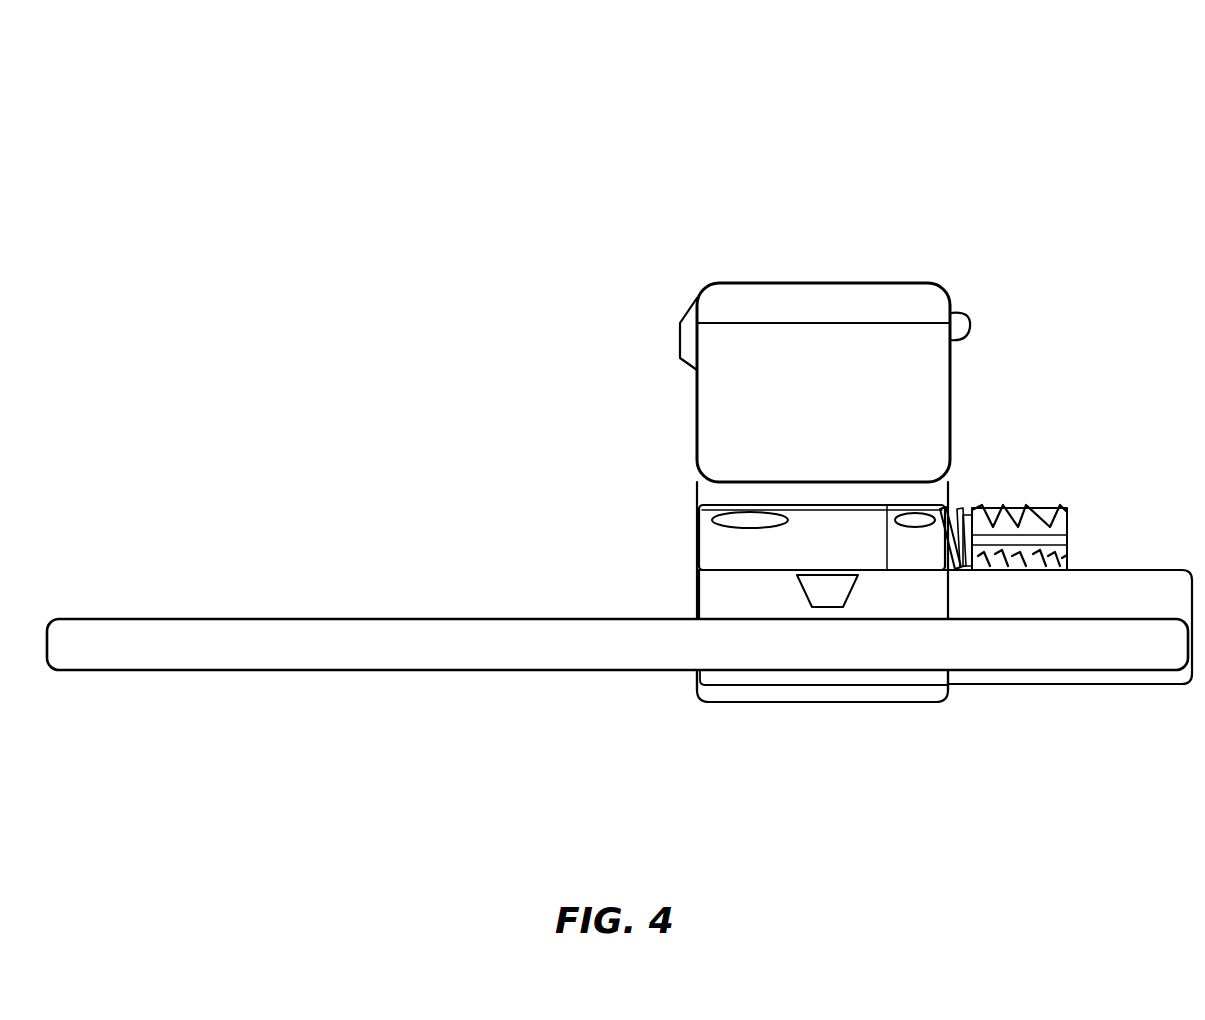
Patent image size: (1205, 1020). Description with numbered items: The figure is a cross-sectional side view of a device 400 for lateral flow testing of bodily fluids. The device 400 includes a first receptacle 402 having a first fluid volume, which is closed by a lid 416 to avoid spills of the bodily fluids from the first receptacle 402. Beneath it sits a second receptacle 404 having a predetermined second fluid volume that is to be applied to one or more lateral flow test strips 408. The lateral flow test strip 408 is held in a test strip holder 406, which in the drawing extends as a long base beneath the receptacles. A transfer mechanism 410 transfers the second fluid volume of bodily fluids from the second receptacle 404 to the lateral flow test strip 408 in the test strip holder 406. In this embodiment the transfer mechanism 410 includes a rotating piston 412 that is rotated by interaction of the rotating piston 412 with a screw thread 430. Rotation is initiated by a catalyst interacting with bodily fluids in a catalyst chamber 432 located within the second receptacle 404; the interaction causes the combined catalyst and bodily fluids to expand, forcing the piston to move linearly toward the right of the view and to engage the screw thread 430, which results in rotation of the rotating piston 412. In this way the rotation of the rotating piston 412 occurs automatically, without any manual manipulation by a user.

The device 400 is at (342, 90).
The first receptacle 402 is at (697, 432).
The second receptacle 404 is at (712, 556).
The test strip holder 406 is at (963, 687).
The lateral flow test strip 408 is at (527, 672).
The transfer mechanism 410 is at (660, 518).
The rotating piston 412 is at (1068, 512).
The lid 416 is at (812, 283).
The screw thread 430 is at (1020, 508).
The catalyst chamber 432 is at (906, 533).